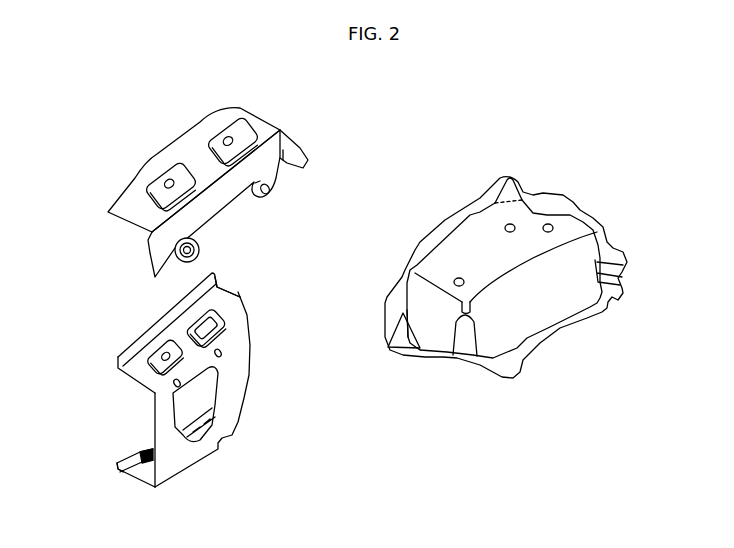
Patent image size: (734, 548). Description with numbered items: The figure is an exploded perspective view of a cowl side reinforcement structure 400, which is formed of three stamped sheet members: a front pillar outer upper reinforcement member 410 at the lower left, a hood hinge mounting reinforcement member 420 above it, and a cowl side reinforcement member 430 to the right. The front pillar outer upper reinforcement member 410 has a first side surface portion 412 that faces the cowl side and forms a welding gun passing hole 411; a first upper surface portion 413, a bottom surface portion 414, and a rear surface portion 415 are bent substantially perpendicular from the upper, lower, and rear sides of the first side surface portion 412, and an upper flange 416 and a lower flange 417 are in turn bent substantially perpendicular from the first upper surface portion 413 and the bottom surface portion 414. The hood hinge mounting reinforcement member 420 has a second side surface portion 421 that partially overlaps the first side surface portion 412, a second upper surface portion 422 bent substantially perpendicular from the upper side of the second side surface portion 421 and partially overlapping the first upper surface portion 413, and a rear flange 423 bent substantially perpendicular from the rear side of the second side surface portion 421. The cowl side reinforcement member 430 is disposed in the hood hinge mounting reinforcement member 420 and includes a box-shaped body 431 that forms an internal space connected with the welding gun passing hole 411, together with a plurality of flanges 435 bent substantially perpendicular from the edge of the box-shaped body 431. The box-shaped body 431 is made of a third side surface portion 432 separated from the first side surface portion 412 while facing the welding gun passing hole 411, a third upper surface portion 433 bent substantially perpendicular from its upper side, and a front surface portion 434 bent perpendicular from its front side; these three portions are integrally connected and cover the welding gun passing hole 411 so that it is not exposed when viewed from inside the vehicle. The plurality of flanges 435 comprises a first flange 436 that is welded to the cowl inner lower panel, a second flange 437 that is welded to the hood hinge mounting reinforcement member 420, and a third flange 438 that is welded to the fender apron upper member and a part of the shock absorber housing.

The cowl side reinforcement structure 400 is at (402, 126).
The front pillar outer upper reinforcement member 410 is at (186, 479).
The welding gun passing hole 411 is at (207, 402).
The first side surface portion 412 is at (160, 425).
The first upper surface portion 413 is at (222, 295).
The bottom surface portion 414 is at (143, 474).
The rear surface portion 415 is at (249, 350).
The upper flange 416 is at (141, 330).
The lower flange 417 is at (120, 470).
The hood hinge mounting reinforcement member 420 is at (251, 105).
The second side surface portion 421 is at (218, 200).
The second upper surface portion 422 is at (180, 143).
The rear flange 423 is at (297, 150).
The cowl side reinforcement member 430 is at (610, 221).
The box-shaped body 431 is at (413, 457).
The third side surface portion 432 is at (527, 317).
The third upper surface portion 433 is at (472, 275).
The front surface portion 434 is at (441, 337).
The plurality of flanges 435 is at (656, 477).
The first flange 436 is at (622, 296).
The second flange 437 is at (484, 192).
The third flange 438 is at (403, 357).